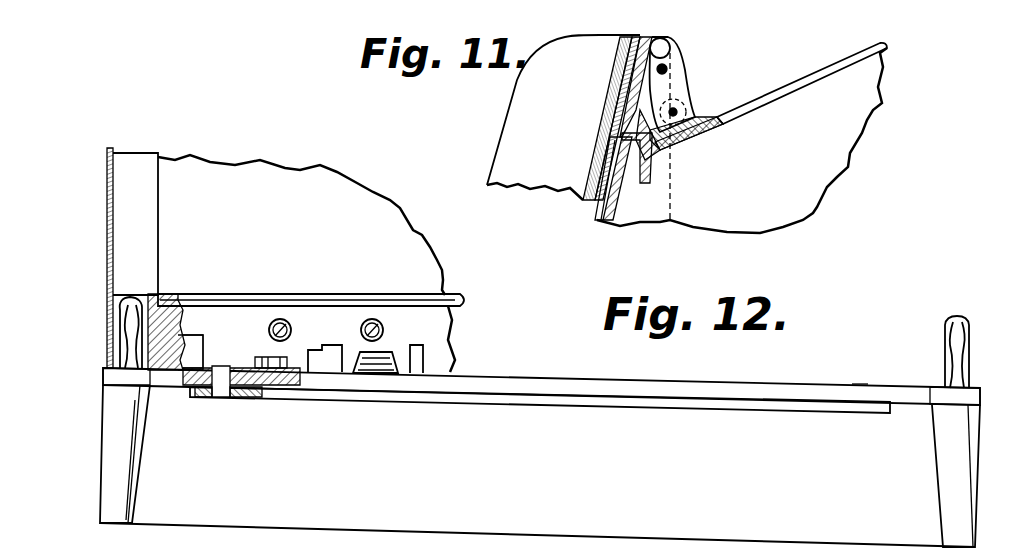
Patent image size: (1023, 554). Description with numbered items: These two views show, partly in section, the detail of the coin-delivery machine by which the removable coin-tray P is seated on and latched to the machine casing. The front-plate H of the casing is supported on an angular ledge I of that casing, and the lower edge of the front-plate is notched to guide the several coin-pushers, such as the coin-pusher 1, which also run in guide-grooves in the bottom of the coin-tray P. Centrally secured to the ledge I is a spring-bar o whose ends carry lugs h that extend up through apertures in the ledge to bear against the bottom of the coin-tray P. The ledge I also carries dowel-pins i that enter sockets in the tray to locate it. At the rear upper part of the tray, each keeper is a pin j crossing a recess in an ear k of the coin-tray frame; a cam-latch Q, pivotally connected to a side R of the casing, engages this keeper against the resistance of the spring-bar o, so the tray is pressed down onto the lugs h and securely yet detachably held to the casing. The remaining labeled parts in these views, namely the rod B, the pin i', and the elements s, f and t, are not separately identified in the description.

In FIG. 11, the coin-tray P is at (512, 131).
In FIG. 12, the coin-tray P is at (448, 280).
In FIG. 11, the sides of the machine casing R is at (866, 85).
In FIG. 11, the rod B is at (793, 83).
In FIG. 11, the cam-latch Q is at (687, 72).
In FIG. 11, the ear of the coin-tray frame k is at (648, 35).
In FIG. 11, the pin j is at (673, 61).
In FIG. 11, the front-plate H is at (703, 187).
In FIG. 12, the angular ledge I is at (486, 383).
In FIG. 12, the spring-bar o is at (412, 393).
In FIG. 12, the knob i' is at (110, 332).
In FIG. 12, the dowel-pin i is at (972, 352).
In FIG. 12, the lug h is at (222, 372).
In FIG. 12, the block s is at (182, 352).
In FIG. 12, the coin-pusher 1 is at (310, 350).
In FIG. 12, the block f is at (336, 348).
In FIG. 12, the block t is at (418, 345).